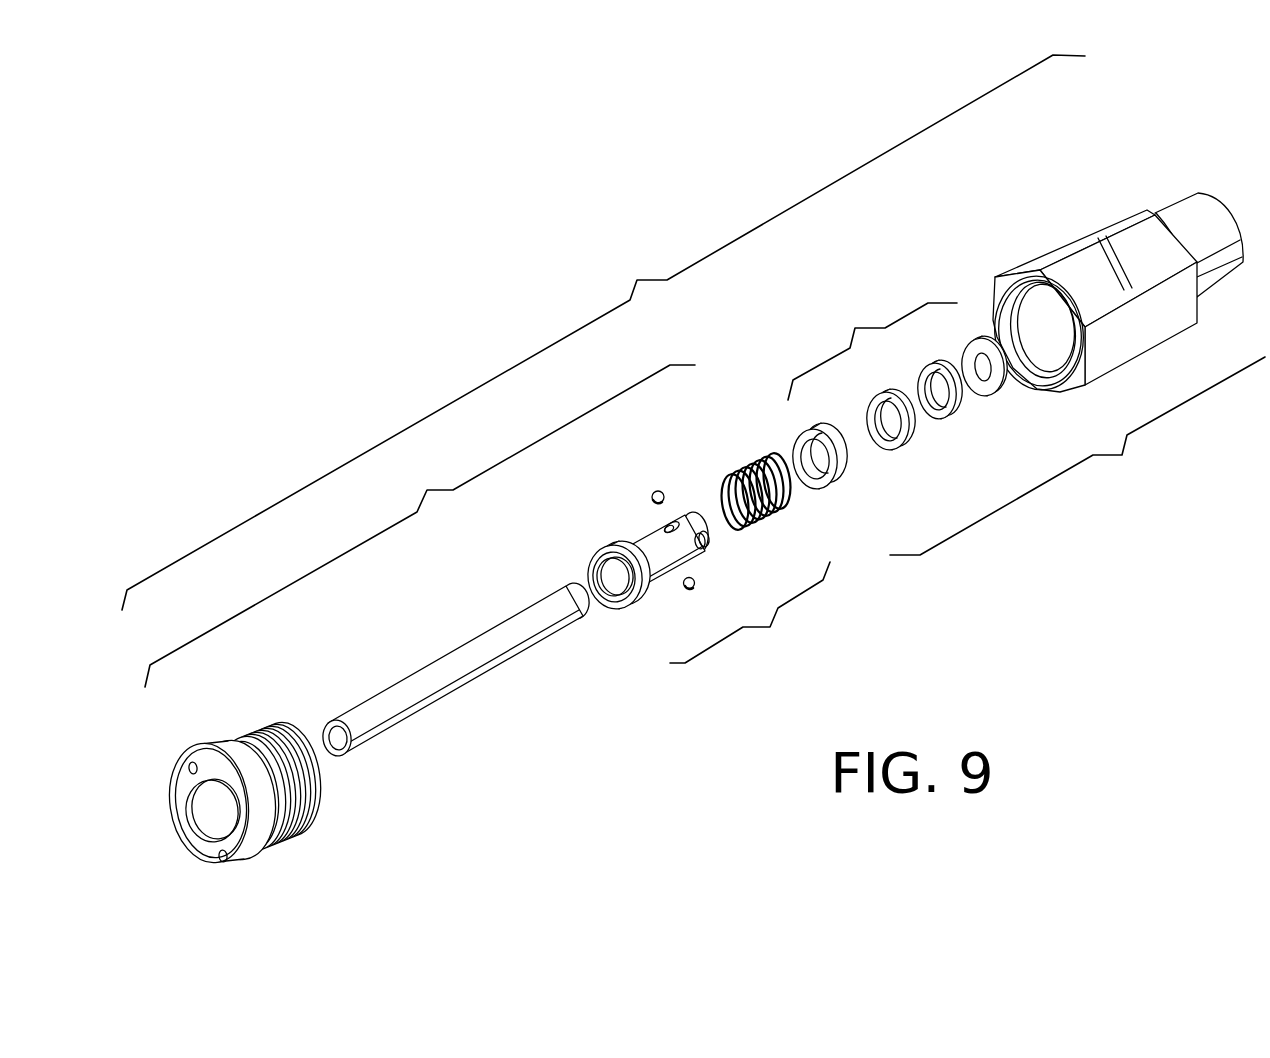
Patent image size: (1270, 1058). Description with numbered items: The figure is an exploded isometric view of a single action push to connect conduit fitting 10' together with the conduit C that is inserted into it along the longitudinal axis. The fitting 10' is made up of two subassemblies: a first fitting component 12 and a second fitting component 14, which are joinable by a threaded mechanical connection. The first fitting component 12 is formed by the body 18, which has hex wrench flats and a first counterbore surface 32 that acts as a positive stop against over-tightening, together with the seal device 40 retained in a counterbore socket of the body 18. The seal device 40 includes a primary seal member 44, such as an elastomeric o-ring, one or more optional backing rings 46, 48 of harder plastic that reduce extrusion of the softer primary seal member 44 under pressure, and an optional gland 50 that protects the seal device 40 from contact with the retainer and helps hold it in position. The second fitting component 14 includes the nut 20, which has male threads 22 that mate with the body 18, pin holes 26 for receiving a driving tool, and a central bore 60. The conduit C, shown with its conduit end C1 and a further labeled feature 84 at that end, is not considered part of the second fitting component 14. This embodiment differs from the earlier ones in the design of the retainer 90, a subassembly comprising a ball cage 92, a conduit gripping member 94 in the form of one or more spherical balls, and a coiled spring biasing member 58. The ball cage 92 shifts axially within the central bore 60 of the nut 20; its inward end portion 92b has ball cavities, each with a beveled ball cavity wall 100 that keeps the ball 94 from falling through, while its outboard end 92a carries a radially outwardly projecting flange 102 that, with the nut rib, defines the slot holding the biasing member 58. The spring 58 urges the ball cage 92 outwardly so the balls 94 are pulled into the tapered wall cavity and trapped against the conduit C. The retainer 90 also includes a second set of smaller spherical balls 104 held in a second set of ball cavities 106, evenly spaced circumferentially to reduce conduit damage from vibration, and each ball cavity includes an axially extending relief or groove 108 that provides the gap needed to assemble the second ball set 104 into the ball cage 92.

The single action push to connect conduit fitting 10' is at (603, 332).
The first fitting component 12 is at (1077, 374).
The second fitting component 14 is at (420, 526).
The body 18 is at (1092, 310).
The nut 20 is at (226, 804).
The male threads 22 is at (299, 823).
The pin holes 26 is at (190, 766).
The first counterbore surface 32 is at (1058, 367).
The seal device 40 is at (872, 349).
The primary seal member 44 is at (995, 400).
The backing ring 46 is at (955, 415).
The backing ring 48 is at (903, 445).
The gland 50 is at (840, 478).
The biasing member 58 is at (792, 503).
The central bore 60 is at (205, 813).
The tube end 84 is at (573, 586).
The retainer 90 is at (750, 612).
The ball cage 92 is at (670, 562).
The outboard end 92a is at (620, 606).
The inward end portion 92b is at (712, 537).
The conduit gripping member 94 is at (657, 490).
The ball cavity wall 100 is at (708, 546).
The flange 102 is at (603, 550).
The second set of spherical balls 104 is at (694, 587).
The second set of ball cavities 106 is at (660, 545).
The relief or groove 108 is at (683, 517).
The conduit C is at (467, 660).
The conduit end C1 is at (583, 618).